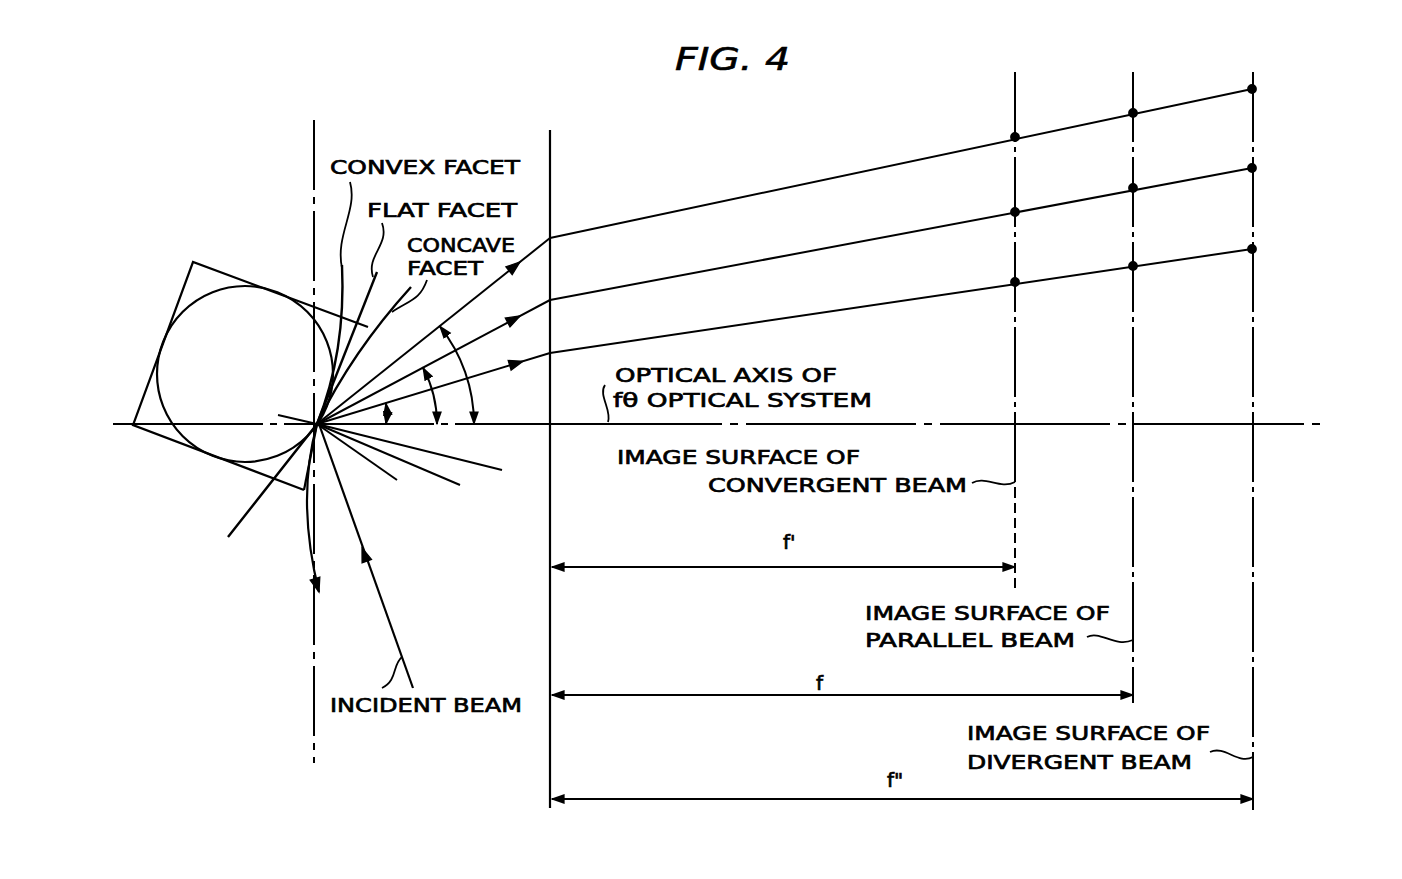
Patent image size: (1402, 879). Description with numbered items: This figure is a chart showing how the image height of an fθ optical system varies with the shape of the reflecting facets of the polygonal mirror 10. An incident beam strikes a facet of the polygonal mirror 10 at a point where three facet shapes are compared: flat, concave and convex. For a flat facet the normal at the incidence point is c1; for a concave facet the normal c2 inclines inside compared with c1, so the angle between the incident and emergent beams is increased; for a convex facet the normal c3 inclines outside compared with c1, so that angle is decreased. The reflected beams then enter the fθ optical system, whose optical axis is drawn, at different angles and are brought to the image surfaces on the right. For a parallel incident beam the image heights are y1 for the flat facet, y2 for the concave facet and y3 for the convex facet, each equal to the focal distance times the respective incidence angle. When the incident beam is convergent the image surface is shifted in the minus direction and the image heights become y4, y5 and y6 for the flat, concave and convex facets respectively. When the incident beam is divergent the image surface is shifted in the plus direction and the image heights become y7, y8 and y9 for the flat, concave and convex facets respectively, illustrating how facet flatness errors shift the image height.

The polygon mirror 10 is at (203, 272).
The normal of the flat reflecting facet c1 is at (447, 486).
The normal of the concave reflecting facet c2 is at (495, 471).
The normal of the convex reflecting facet c3 is at (385, 478).
The image height for parallel beam and flat facet y1 is at (1135, 190).
The image height for parallel beam and concave facet y2 is at (1135, 115).
The image height for parallel beam and convex facet y3 is at (1135, 268).
The image height for convergent beam and flat facet y4 is at (1017, 214).
The image height for convergent beam and concave facet y5 is at (1017, 139).
The image height for convergent beam and convex facet y6 is at (1017, 284).
The image height for divergent beam and flat facet y7 is at (1254, 170).
The image height for divergent beam and concave facet y8 is at (1254, 91).
The image height for divergent beam and convex facet y9 is at (1254, 251).